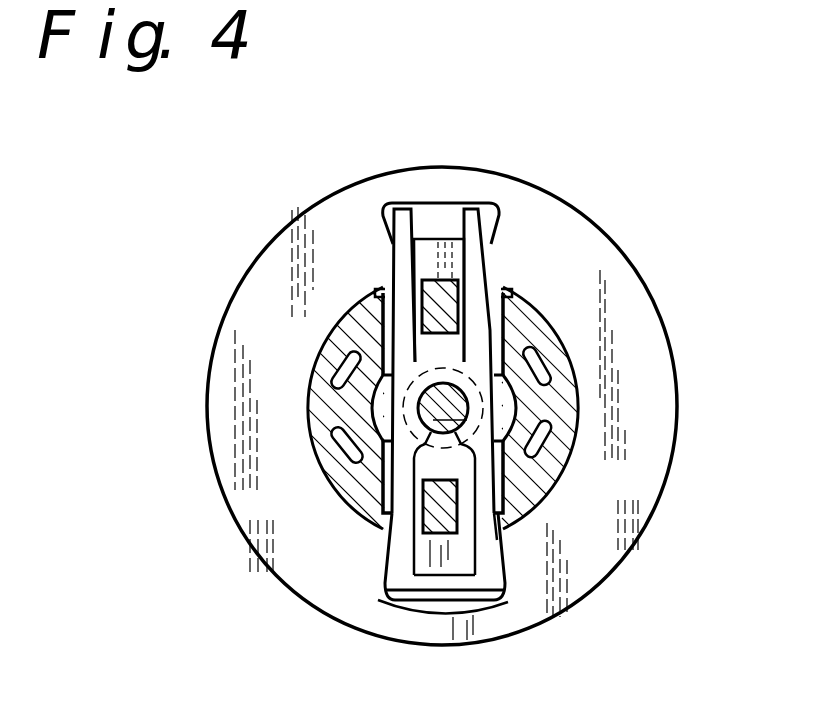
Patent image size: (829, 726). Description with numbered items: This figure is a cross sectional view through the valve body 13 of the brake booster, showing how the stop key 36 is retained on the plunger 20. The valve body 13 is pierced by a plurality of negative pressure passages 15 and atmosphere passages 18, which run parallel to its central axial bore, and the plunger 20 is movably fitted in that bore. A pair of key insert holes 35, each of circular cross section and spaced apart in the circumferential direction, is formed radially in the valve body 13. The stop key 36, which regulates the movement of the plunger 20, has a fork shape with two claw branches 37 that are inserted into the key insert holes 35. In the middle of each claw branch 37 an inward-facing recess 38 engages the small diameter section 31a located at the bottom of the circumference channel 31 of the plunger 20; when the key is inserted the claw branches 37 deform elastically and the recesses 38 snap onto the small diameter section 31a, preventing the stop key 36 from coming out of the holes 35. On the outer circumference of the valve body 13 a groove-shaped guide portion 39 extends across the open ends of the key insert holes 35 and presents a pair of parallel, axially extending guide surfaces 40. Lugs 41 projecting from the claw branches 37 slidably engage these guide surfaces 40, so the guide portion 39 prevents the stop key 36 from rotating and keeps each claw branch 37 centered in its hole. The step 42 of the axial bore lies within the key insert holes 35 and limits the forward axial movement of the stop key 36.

The valve body 13 is at (237, 287).
The negative pressure passage 15 is at (338, 378).
The atmosphere passages 18 is at (448, 210).
The plunger 20 is at (437, 456).
The circumference channel 31 is at (463, 363).
The small diameter section 31a is at (432, 366).
The key insert holes 35 is at (468, 512).
The stop key 36 is at (492, 612).
The claw branches 37 is at (404, 222).
The recess 38 is at (433, 422).
The guide portion 39 is at (443, 275).
The guide surfaces 40 is at (376, 293).
The lugs 41 is at (384, 523).
The step 42 is at (506, 515).